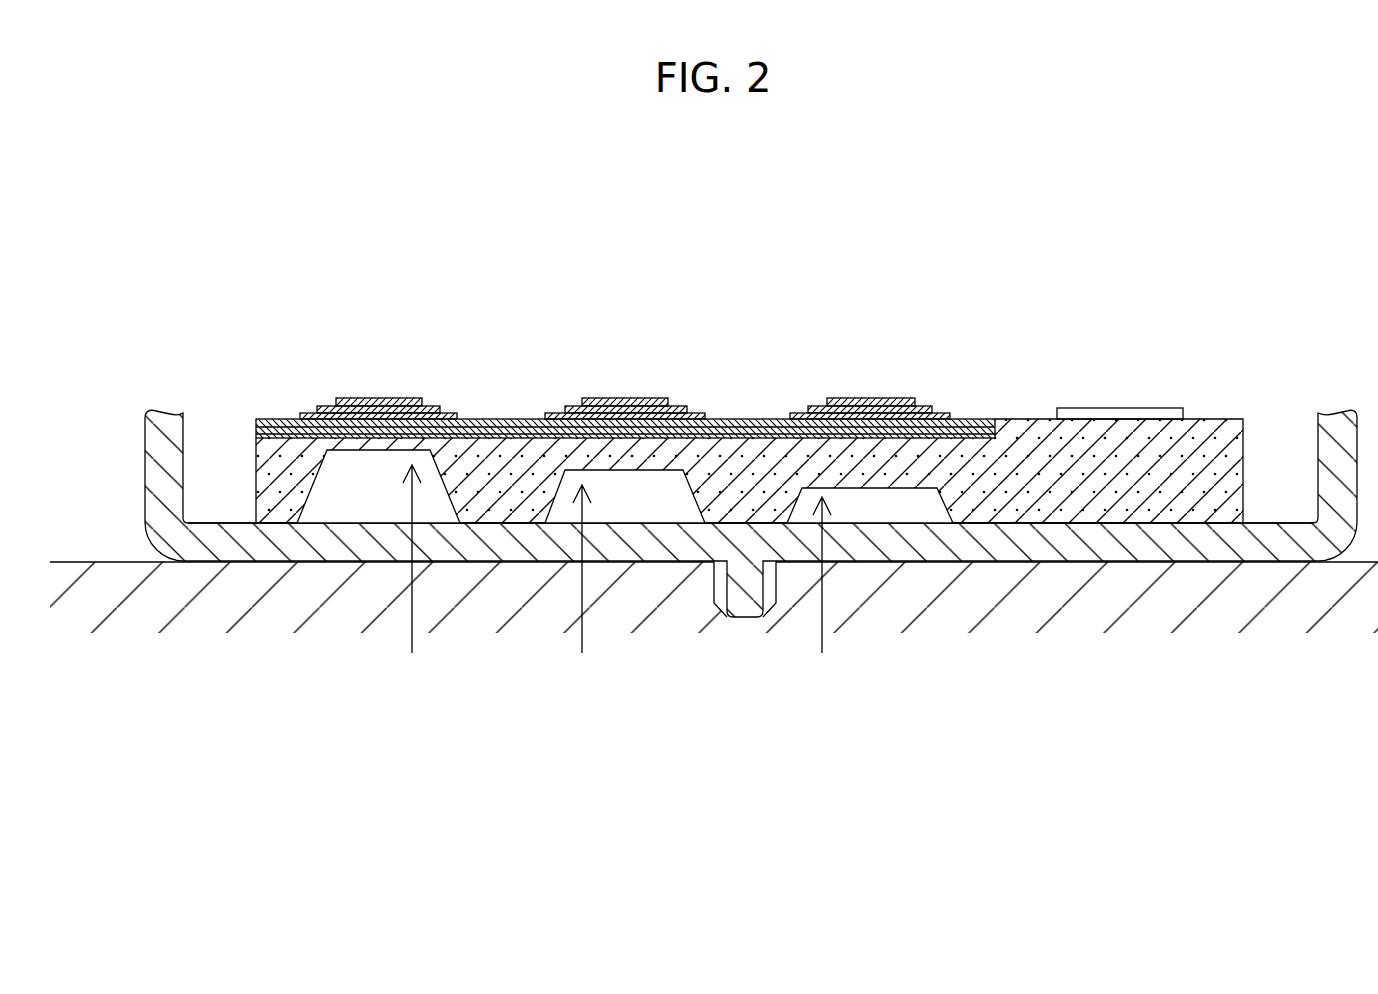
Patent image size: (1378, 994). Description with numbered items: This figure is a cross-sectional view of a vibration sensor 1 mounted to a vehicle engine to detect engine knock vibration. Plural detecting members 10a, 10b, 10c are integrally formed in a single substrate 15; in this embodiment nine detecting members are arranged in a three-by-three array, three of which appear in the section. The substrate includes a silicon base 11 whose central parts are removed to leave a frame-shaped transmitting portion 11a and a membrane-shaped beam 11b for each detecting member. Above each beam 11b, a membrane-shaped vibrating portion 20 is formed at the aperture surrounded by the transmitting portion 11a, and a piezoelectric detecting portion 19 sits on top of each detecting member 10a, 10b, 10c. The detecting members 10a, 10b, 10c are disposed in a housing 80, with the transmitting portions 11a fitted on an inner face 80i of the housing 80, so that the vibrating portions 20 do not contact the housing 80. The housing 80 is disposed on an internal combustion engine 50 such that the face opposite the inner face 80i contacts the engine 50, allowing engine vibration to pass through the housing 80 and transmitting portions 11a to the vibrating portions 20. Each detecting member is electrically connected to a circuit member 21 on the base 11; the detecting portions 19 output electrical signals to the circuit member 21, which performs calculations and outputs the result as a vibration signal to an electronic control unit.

The vibration sensor 1 is at (1091, 239).
The detecting member 10a is at (414, 340).
The detecting member 10b is at (660, 340).
The detecting member 10c is at (910, 340).
The base 11 is at (1210, 432).
The transmitting portion 11a is at (262, 488).
The beam 11b is at (371, 447).
The substrate 15 is at (1002, 390).
The detecting portion 19 is at (351, 368).
The vibrating portion 20 is at (615, 575).
The circuit member 21 is at (1113, 412).
The internal combustion engine 50 is at (85, 577).
The housing 80 is at (155, 450).
The inner face 80i is at (282, 530).